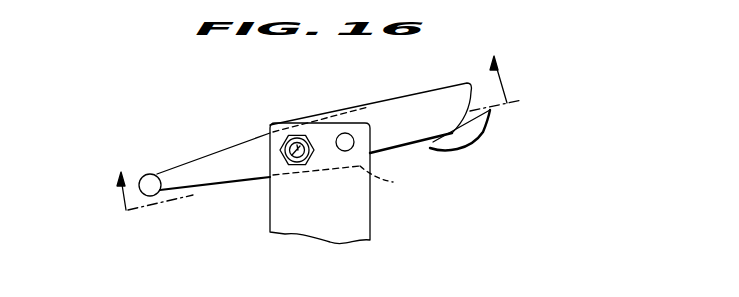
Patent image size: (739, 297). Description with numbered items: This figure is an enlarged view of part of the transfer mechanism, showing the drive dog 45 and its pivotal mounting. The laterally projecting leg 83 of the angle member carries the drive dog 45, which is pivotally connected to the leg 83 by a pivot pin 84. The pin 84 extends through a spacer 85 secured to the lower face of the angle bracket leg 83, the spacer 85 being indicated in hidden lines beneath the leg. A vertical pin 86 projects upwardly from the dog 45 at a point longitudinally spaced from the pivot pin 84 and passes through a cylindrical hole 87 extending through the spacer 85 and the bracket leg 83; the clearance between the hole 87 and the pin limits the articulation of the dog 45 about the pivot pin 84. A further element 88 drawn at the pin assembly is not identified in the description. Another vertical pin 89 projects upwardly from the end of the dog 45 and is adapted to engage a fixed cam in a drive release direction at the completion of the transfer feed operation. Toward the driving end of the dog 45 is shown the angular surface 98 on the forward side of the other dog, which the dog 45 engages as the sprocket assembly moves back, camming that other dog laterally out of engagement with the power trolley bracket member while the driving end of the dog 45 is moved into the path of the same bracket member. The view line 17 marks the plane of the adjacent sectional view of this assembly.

The section line 17 is at (312, 132).
The drive dog 45 is at (420, 100).
The laterally projecting leg 83 is at (360, 231).
The pivot pin 84 is at (348, 134).
The spacer 85 is at (393, 182).
The vertical pin 86 is at (301, 158).
The cylindrical hole 87 is at (319, 142).
The washer 88 is at (281, 152).
The vertical pin 89 is at (153, 175).
The angular surface 98 is at (476, 134).